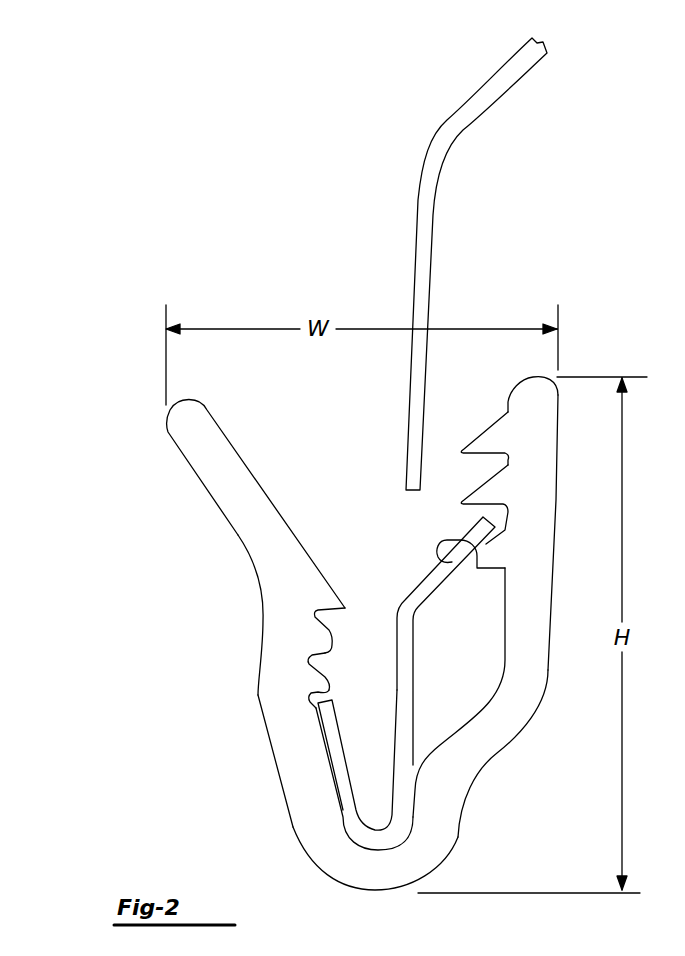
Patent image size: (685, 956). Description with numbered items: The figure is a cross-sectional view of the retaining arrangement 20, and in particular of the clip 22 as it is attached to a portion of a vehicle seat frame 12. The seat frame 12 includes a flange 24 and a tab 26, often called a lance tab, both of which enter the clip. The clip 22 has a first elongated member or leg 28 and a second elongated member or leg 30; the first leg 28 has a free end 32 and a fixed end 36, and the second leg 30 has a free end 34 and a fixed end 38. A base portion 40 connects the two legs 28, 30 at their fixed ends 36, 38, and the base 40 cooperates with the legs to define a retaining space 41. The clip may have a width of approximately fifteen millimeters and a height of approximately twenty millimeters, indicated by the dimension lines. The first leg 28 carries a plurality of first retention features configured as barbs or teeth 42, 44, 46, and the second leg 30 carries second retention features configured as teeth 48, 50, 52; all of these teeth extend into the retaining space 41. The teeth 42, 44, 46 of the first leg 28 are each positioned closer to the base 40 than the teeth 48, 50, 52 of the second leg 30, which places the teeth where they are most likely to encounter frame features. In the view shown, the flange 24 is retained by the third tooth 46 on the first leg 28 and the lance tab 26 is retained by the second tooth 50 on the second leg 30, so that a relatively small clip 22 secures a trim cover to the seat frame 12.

The seat frame 12 is at (510, 83).
The retaining arrangement 20 is at (591, 350).
The clip 22 is at (261, 678).
The flange 24 is at (356, 740).
The tab 26 is at (440, 537).
The first elongated member or leg 28 is at (258, 705).
The second elongated member or leg 30 is at (502, 592).
The free end 32 is at (193, 403).
The free end 34 is at (527, 372).
The fixed end 36 is at (293, 825).
The fixed end 38 is at (463, 812).
The base portion 40 is at (367, 892).
The retaining space 41 is at (371, 496).
The tooth 42 is at (346, 607).
The tooth 44 is at (312, 618).
The third tooth 46 is at (334, 678).
The tooth 48 is at (493, 418).
The second tooth 50 is at (470, 522).
The tooth 52 is at (477, 568).